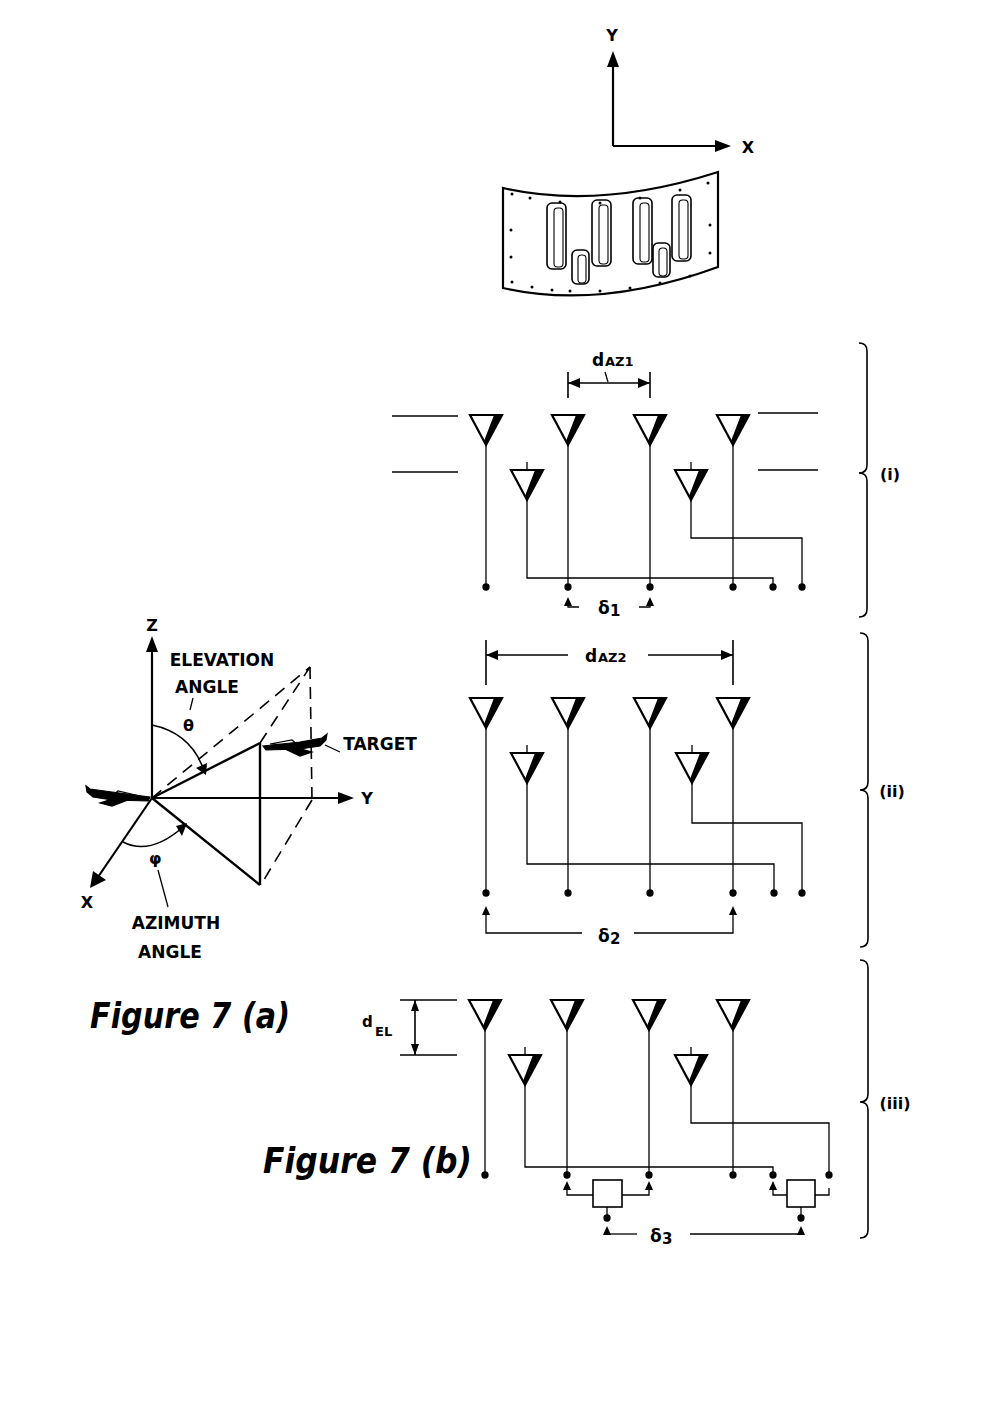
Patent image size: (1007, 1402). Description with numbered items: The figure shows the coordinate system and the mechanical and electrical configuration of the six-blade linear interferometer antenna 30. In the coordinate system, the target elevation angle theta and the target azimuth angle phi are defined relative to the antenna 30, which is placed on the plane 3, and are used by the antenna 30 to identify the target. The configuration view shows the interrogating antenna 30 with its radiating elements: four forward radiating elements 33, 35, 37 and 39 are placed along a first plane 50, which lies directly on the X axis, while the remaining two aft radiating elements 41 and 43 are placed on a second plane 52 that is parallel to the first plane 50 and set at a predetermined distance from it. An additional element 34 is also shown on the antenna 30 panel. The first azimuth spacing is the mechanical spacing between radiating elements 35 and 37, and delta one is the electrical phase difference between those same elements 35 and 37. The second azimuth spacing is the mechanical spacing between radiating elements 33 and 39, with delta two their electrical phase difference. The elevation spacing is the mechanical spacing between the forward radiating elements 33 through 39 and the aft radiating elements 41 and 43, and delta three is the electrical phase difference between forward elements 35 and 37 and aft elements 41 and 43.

In FIG. 7A, the plane 3 is at (83, 787).
In FIG. 7B, the antenna 30 is at (494, 232).
In FIG. 7B, the radiating element 33 is at (697, 220).
In FIG. 7B, the antenna element 34 is at (558, 202).
In FIG. 7B, the radiating element 35 is at (642, 202).
In FIG. 7B, the radiating element 37 is at (602, 200).
In FIG. 7B, the radiating element 39 is at (484, 414).
In FIG. 7B, the aft radiating element 41 is at (661, 279).
In FIG. 7B, the aft radiating element 43 is at (583, 284).
In FIG. 7B, the first plane 50 is at (604, 415).
In FIG. 7B, the second plane 52 is at (604, 471).